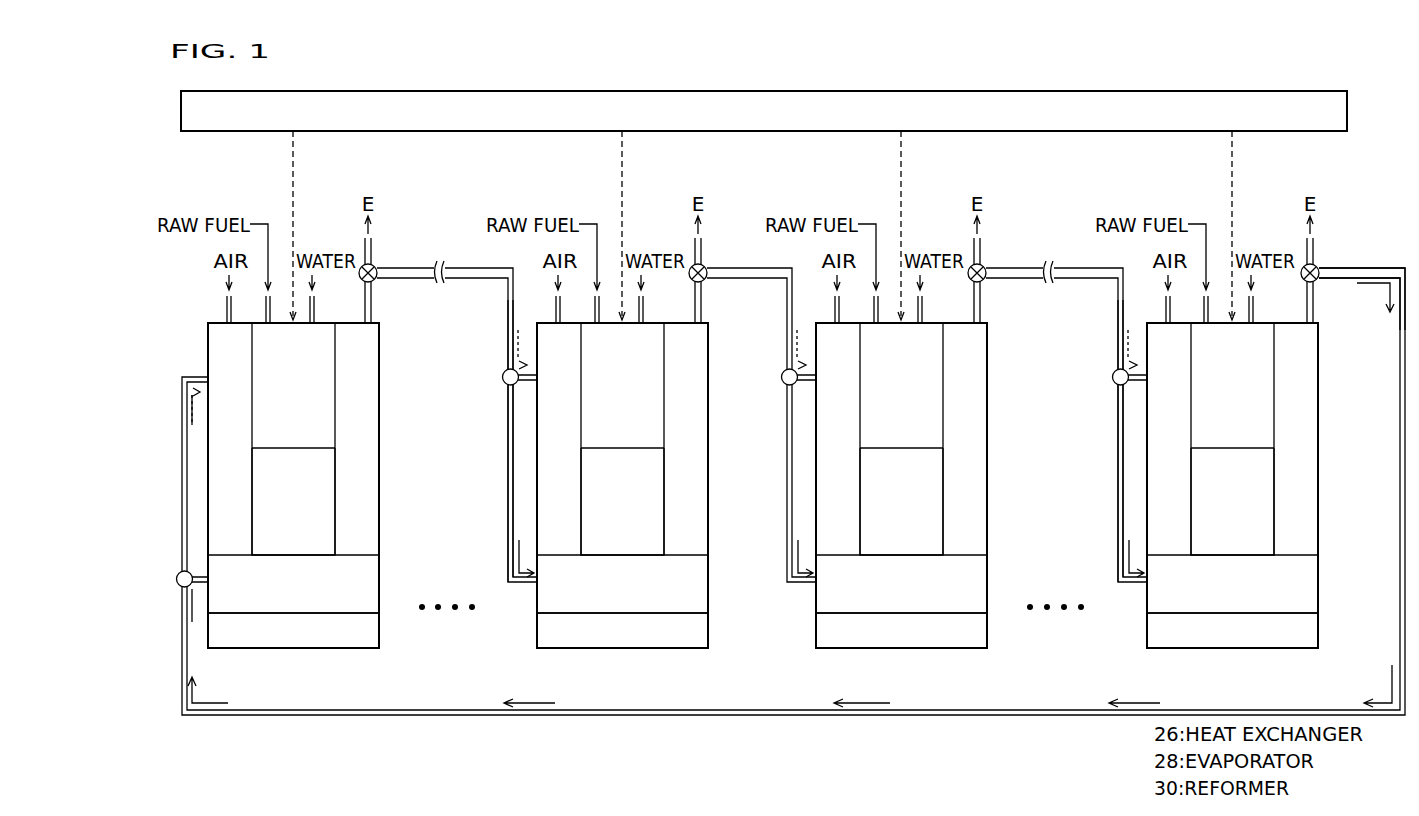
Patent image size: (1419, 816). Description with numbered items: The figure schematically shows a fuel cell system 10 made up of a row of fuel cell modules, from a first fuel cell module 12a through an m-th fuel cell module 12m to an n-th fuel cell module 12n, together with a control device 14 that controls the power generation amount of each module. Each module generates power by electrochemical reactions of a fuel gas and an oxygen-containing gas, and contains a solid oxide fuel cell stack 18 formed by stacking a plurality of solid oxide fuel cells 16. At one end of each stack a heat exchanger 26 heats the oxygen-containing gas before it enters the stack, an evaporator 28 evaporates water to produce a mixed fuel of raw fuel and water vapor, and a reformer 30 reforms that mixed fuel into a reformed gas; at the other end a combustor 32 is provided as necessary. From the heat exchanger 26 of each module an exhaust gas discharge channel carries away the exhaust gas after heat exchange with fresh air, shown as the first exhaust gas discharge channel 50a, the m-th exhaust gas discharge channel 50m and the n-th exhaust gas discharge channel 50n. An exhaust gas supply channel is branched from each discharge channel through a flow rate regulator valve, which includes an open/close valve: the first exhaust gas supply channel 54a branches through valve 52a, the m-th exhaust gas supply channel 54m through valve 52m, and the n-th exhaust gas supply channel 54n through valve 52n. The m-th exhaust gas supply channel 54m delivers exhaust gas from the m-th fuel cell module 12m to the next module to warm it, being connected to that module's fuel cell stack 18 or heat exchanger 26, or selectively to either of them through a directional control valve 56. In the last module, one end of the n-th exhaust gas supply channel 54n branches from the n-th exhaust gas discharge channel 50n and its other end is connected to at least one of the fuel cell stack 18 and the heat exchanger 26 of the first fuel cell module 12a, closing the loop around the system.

The fuel cell system 10 is at (911, 71).
The control device 14 is at (1068, 91).
The first fuel cell module 12a is at (264, 206).
The m-th fuel cell module 12m is at (591, 206).
The n-th fuel cell module 12n is at (1201, 206).
The solid oxide fuel cell 16 is at (380, 585).
The solid oxide fuel cell stack 18 is at (360, 604).
The heat exchanger 26 is at (762, 439).
The evaporator 28 is at (763, 413).
The reformer 30 is at (763, 501).
The combustor 32 is at (368, 649).
The first exhaust gas discharge channel 50a is at (365, 309).
The m-th exhaust gas discharge channel 50m is at (695, 309).
The n-th exhaust gas discharge channel 50n is at (1305, 309).
The flow rate regulator valve 52a is at (375, 267).
The flow rate regulator valve 52m is at (705, 267).
The flow rate regulator valve 52n is at (1317, 267).
The first exhaust gas supply channel 54a is at (378, 280).
The m-th exhaust gas supply channel 54m is at (728, 278).
The n-th exhaust gas supply channel 54n is at (1322, 278).
The directional control valve 56 is at (176, 582).